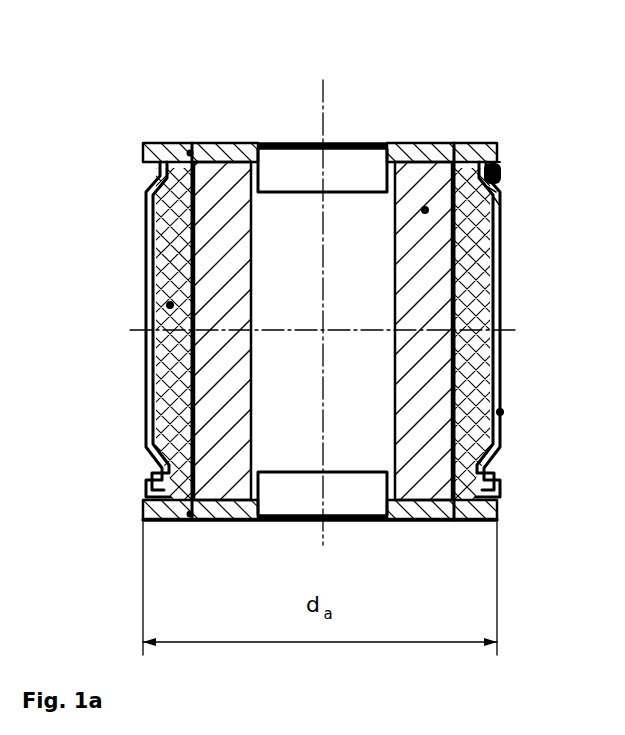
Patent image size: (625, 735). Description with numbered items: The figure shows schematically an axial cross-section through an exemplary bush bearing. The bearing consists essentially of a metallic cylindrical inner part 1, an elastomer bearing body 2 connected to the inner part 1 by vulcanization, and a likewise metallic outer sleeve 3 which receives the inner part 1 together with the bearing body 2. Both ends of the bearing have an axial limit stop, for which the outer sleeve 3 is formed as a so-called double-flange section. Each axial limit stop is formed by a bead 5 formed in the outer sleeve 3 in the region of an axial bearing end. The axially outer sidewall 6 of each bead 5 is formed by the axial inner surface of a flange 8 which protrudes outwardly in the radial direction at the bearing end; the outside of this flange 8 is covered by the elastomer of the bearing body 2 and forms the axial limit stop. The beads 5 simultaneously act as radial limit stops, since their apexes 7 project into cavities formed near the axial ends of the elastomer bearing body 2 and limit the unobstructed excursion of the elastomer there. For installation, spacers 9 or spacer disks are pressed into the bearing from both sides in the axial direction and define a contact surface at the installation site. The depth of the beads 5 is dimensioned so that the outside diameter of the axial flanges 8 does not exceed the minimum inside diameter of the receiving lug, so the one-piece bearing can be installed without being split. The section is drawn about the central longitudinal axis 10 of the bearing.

The inner part 1 is at (426, 207).
The elastomer bearing body 2 is at (168, 303).
The outer sleeve 3 is at (501, 440).
The bead 5 is at (504, 216).
The axially outer sidewall 6 is at (486, 187).
The apex 7 is at (488, 190).
The flange 8 is at (494, 178).
The spacer 9 is at (190, 150).
The longitudinal axis 10 is at (323, 108).